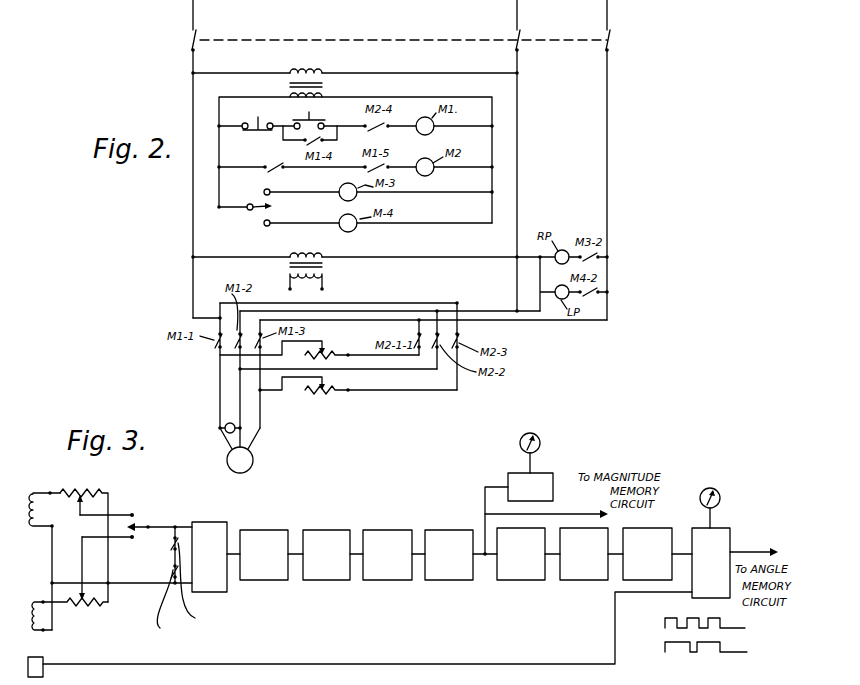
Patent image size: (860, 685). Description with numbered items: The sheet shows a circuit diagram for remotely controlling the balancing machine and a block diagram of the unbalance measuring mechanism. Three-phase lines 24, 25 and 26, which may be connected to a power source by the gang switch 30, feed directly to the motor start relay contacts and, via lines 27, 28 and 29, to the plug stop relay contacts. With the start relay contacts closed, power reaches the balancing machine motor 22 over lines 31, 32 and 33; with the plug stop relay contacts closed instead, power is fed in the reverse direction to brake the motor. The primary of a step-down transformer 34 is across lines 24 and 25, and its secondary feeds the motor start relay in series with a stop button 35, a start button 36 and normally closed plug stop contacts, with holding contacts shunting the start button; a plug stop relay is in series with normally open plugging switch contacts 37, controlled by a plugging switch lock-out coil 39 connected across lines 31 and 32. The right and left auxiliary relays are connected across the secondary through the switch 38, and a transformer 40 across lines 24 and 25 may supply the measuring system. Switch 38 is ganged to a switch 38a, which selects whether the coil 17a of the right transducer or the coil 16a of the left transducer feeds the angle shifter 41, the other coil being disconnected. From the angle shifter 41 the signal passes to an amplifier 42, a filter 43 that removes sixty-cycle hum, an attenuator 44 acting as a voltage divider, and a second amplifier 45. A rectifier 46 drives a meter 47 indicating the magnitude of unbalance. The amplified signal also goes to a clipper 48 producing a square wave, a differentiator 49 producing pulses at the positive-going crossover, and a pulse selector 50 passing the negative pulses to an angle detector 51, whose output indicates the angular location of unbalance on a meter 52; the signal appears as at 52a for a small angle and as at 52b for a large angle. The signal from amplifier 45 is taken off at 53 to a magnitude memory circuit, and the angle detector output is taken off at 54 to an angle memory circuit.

In FIG. 2, the balancing machine motor 22 is at (253, 460).
In FIG. 2, the three-phase line 24 is at (193, 61).
In FIG. 2, the three-phase line 25 is at (517, 61).
In FIG. 2, the three-phase line 26 is at (607, 78).
In FIG. 2, the line 27 is at (419, 321).
In FIG. 3, the line 27 is at (36, 678).
In FIG. 2, the line 28 is at (437, 311).
In FIG. 2, the line 29 is at (457, 303).
In FIG. 2, the gang switch 30 is at (378, 40).
In FIG. 2, the line 31 is at (220, 366).
In FIG. 2, the line 32 is at (240, 384).
In FIG. 2, the line 33 is at (262, 405).
In FIG. 2, the step-down transformer 34 is at (326, 85).
In FIG. 2, the stop button 35 is at (258, 133).
In FIG. 2, the start button 36 is at (288, 119).
In FIG. 2, the plugging switch contacts 37 is at (270, 166).
In FIG. 2, the switch 38 is at (254, 203).
In FIG. 2, the plugging switch lock-out coil 39 is at (227, 423).
In FIG. 2, the transformer 40 is at (323, 266).
In FIG. 3, the coil 16a is at (37, 630).
In FIG. 3, the coil 17a is at (32, 492).
In FIG. 3, the switch 38a is at (146, 518).
In FIG. 3, the angle shifter 41 is at (209, 557).
In FIG. 3, the amplifier 42 is at (264, 555).
In FIG. 3, the filter 43 is at (326, 555).
In FIG. 3, the attenuator 44 is at (387, 555).
In FIG. 3, the amplifier 45 is at (449, 555).
In FIG. 3, the rectifier 46 is at (519, 513).
In FIG. 3, the meter 47 is at (541, 440).
In FIG. 3, the clipper 48 is at (521, 554).
In FIG. 3, the differentiator 49 is at (584, 554).
In FIG. 3, the pulse selector 50 is at (647, 554).
In FIG. 3, the angle detector 51 is at (711, 563).
In FIG. 3, the meter 52 is at (721, 496).
In FIG. 3, the signal 52a is at (658, 623).
In FIG. 3, the signal 52b is at (658, 648).
In FIG. 3, the take-off 53 is at (600, 513).
In FIG. 3, the take-off 54 is at (752, 550).